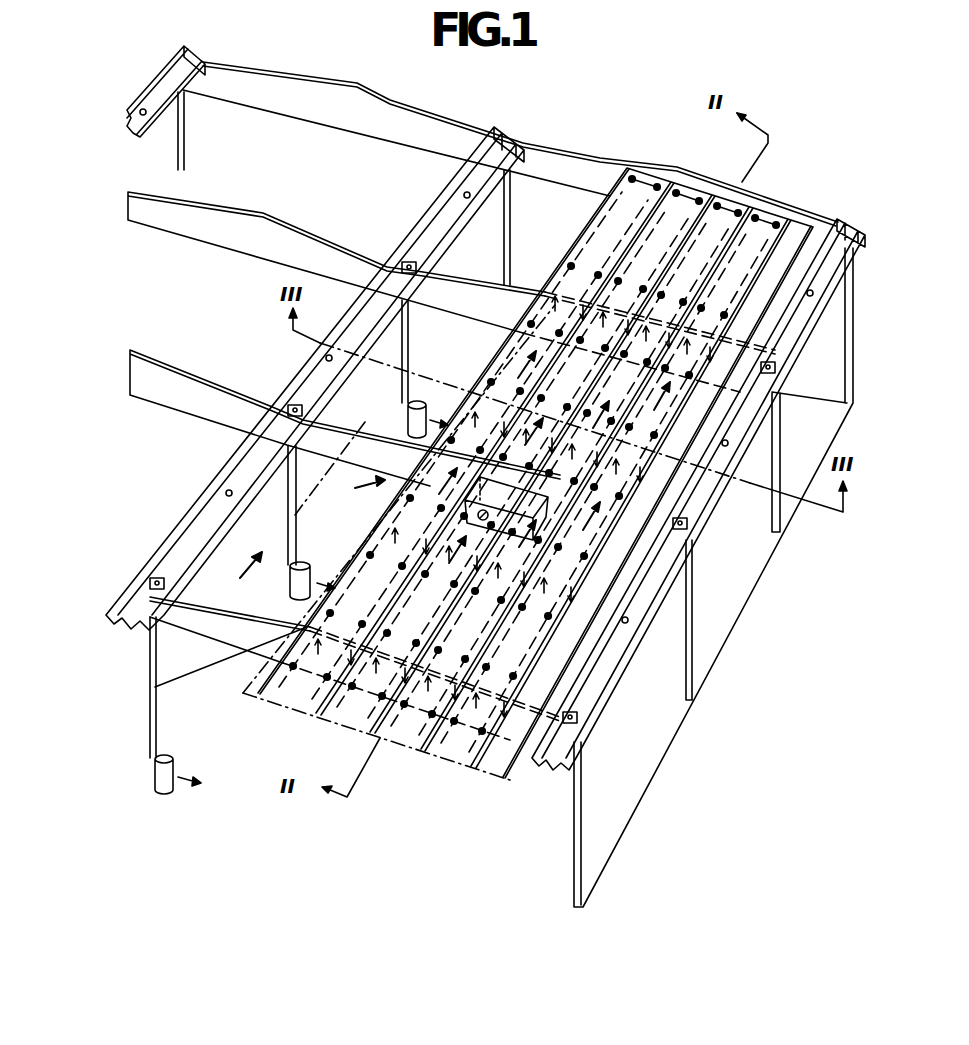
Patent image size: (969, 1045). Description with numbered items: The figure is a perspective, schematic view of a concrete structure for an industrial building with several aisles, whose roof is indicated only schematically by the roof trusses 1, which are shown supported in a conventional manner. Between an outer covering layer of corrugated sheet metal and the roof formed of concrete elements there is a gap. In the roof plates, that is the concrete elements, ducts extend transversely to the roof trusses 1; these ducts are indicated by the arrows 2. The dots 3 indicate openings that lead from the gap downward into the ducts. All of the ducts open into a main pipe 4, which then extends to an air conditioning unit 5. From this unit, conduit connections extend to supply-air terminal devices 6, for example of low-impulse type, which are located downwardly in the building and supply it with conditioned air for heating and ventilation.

The roof trusses 1 is at (568, 163).
The arrows 2 is at (500, 371).
The dots 3 is at (563, 283).
The main pipe 4 is at (537, 482).
The air conditioning unit 5 is at (517, 523).
The supply-air terminal devices 6 is at (416, 404).